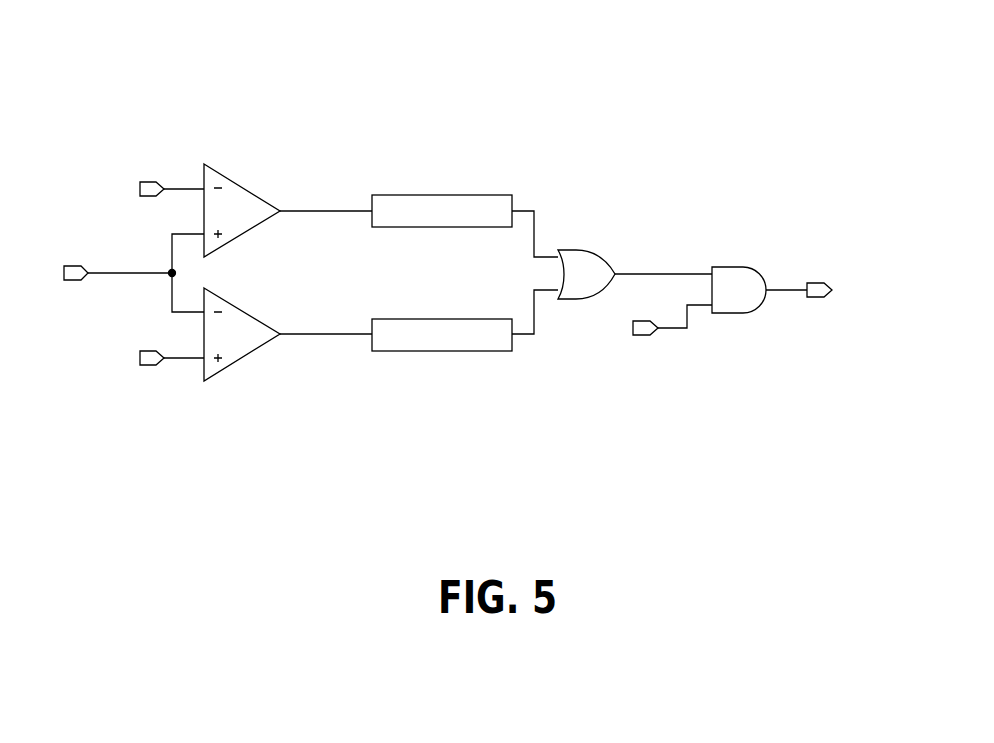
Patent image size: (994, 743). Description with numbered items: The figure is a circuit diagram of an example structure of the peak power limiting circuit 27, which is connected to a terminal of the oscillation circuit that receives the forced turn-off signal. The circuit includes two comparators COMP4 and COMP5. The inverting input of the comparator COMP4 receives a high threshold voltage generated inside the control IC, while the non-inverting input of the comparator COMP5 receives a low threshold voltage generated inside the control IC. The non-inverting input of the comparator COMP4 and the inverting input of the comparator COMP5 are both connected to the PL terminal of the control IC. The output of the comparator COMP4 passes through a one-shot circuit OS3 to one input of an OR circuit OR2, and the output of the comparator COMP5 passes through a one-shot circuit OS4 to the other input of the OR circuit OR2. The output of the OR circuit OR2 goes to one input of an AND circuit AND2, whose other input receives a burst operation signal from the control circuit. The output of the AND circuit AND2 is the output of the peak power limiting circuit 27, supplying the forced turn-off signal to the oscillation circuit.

The peak power limiting circuit 27 is at (702, 168).
The comparator COMP4 is at (243, 202).
The comparator COMP5 is at (247, 323).
The one-shot circuit OS3 is at (447, 195).
The one-shot circuit OS4 is at (447, 319).
The OR circuit OR2 is at (584, 261).
The AND circuit AND2 is at (736, 277).